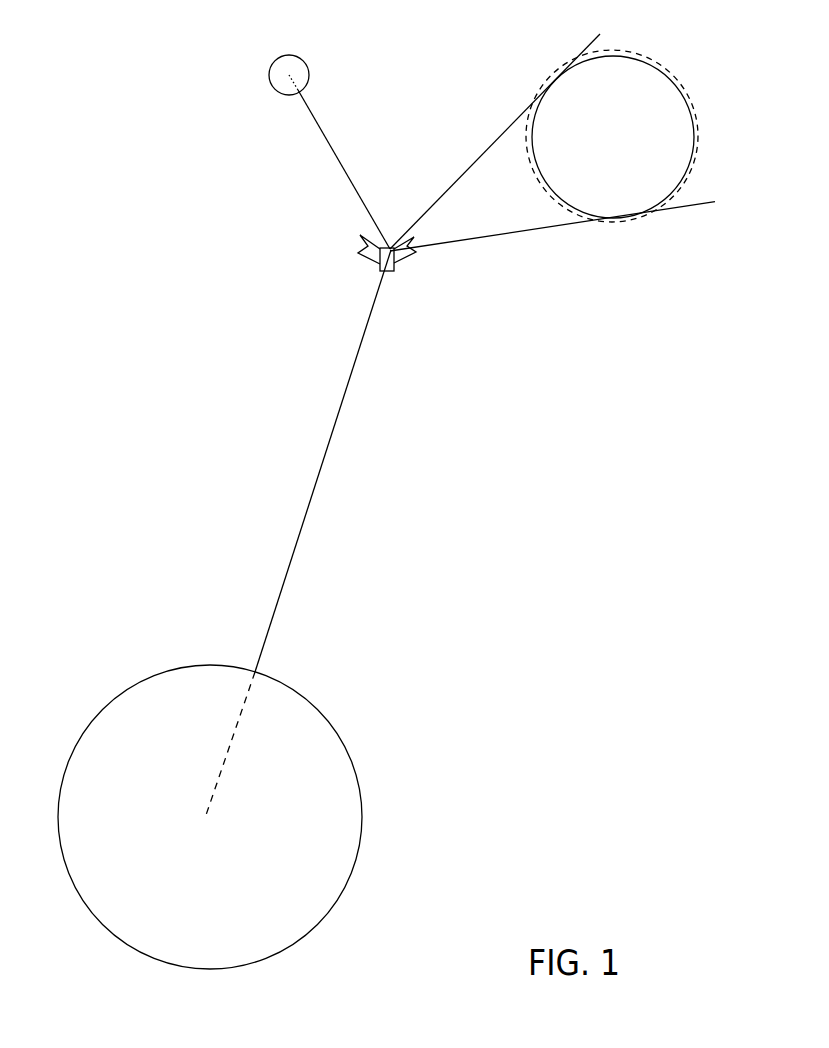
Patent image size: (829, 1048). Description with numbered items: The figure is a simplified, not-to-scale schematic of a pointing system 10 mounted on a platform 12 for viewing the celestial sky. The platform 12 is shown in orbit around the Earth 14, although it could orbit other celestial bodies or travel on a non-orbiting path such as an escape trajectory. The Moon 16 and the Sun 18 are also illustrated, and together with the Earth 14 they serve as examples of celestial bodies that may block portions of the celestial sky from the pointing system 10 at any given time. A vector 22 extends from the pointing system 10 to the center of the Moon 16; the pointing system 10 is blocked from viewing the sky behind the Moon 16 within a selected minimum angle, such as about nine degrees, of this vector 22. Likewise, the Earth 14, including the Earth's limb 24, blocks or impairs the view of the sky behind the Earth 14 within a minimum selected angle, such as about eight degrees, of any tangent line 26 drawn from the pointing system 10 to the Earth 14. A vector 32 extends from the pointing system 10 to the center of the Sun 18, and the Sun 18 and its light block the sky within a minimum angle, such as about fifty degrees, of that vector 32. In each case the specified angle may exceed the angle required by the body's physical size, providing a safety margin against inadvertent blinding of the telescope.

The pointing system 10 is at (380, 268).
The platform 12 is at (400, 262).
The Earth 14 is at (694, 129).
The Moon 16 is at (275, 93).
The Sun 18 is at (350, 757).
The vector 22 is at (335, 148).
The Earth's limb 24 is at (657, 65).
The tangent line 26 is at (513, 233).
The vector 32 is at (280, 592).